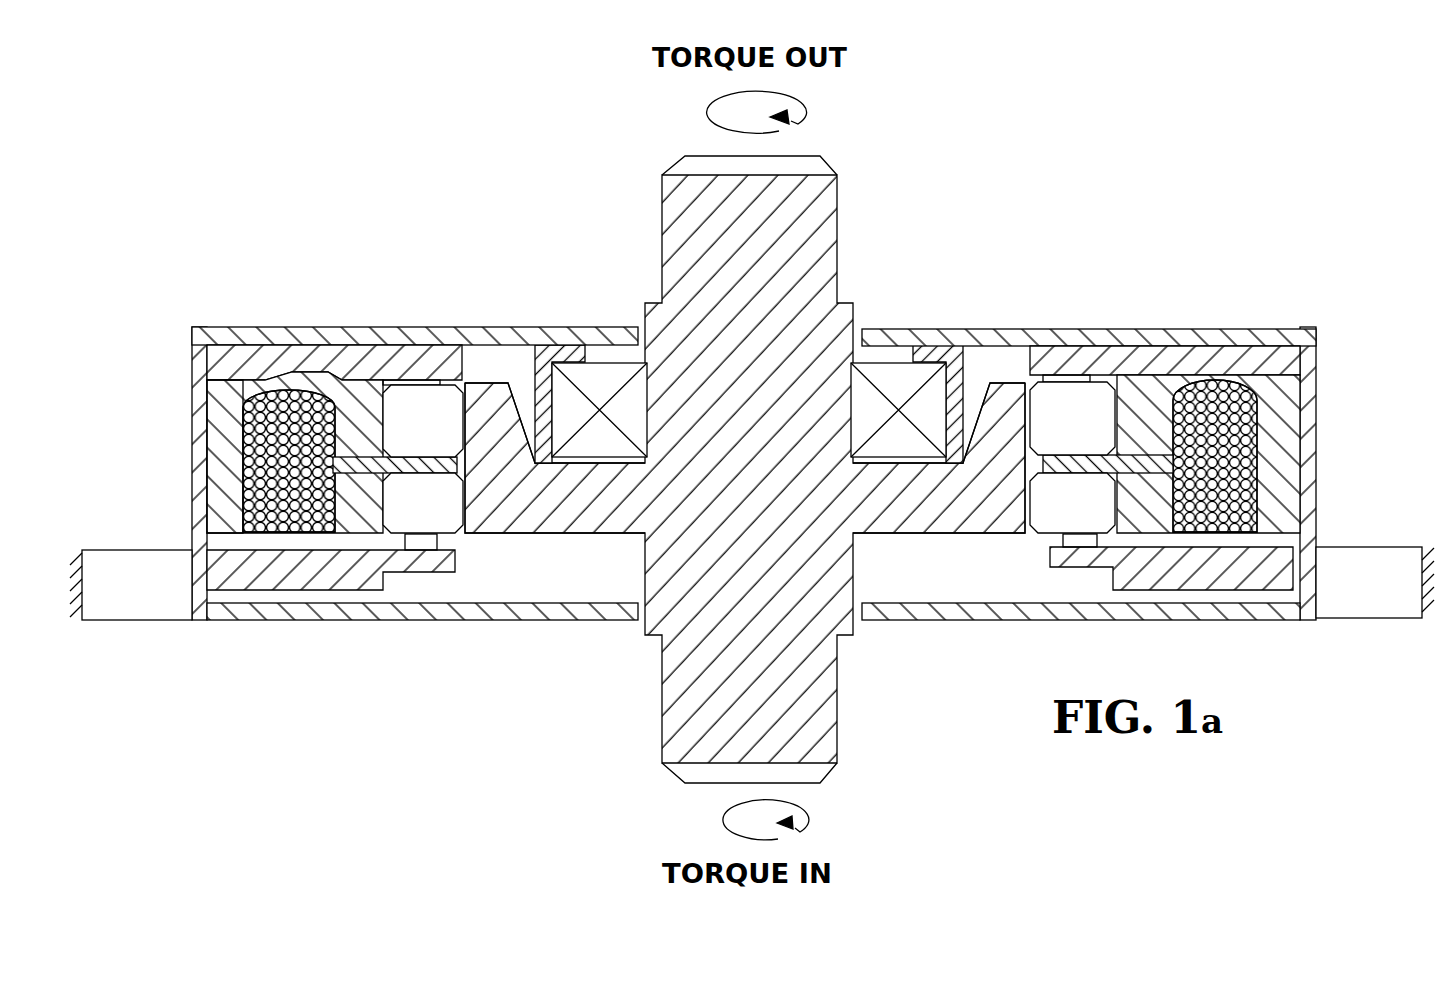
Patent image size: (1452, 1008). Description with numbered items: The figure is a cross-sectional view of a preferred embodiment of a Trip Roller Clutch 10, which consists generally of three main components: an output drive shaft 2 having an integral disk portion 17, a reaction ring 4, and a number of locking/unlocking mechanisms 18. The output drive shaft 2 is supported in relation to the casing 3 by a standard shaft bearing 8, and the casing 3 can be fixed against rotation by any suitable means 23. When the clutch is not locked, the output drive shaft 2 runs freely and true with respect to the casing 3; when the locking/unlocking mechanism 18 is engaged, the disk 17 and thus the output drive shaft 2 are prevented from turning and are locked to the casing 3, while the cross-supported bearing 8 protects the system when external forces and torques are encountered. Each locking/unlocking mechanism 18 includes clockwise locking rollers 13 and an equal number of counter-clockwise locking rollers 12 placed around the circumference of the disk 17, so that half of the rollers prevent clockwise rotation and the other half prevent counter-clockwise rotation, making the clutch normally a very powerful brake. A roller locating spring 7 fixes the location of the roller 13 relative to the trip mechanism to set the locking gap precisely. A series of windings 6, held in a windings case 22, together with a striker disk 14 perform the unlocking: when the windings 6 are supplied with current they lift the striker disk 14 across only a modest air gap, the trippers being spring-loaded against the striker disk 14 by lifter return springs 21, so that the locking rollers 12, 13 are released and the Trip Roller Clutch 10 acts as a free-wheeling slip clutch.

The output drive shaft 2 is at (838, 213).
The casing 3 is at (1318, 395).
The reaction ring 4 is at (356, 380).
The windings 6 is at (252, 438).
The roller locating spring 7 is at (436, 474).
The shaft bearing 8 is at (605, 372).
The Trip Roller Clutch 10 is at (1108, 230).
The counter-clockwise locking roller 12 is at (436, 433).
The clockwise locking roller 13 is at (1090, 432).
The striker disk 14 is at (343, 581).
The disk portion 17 is at (518, 515).
The locking/unlocking mechanism 18 is at (291, 318).
The lifter return spring 21 is at (445, 381).
The windings case 22 is at (221, 503).
The fixing means 23 is at (150, 611).